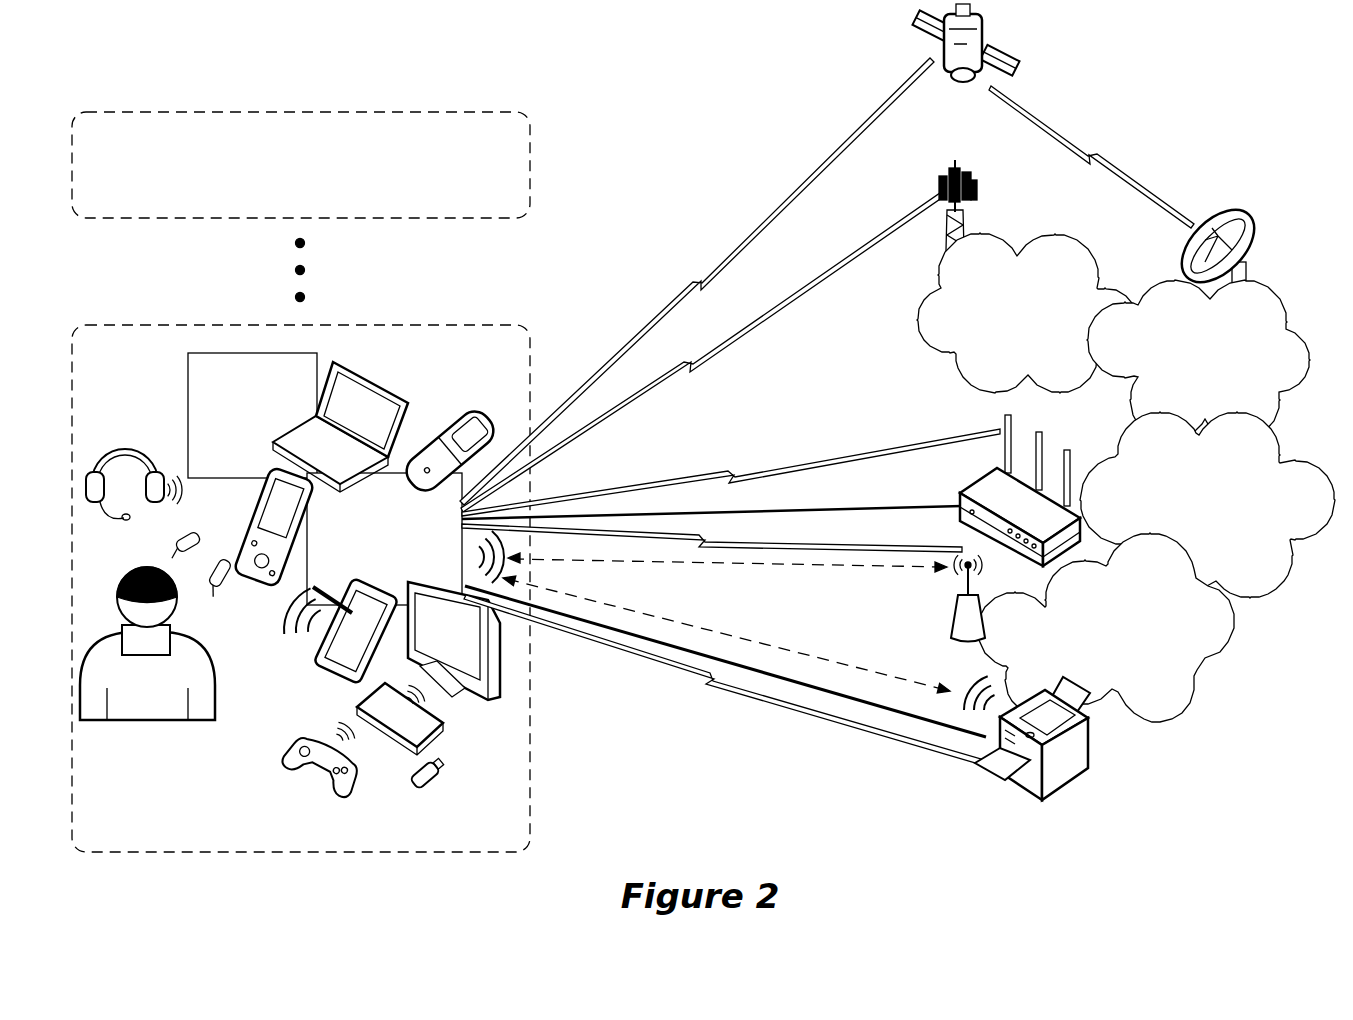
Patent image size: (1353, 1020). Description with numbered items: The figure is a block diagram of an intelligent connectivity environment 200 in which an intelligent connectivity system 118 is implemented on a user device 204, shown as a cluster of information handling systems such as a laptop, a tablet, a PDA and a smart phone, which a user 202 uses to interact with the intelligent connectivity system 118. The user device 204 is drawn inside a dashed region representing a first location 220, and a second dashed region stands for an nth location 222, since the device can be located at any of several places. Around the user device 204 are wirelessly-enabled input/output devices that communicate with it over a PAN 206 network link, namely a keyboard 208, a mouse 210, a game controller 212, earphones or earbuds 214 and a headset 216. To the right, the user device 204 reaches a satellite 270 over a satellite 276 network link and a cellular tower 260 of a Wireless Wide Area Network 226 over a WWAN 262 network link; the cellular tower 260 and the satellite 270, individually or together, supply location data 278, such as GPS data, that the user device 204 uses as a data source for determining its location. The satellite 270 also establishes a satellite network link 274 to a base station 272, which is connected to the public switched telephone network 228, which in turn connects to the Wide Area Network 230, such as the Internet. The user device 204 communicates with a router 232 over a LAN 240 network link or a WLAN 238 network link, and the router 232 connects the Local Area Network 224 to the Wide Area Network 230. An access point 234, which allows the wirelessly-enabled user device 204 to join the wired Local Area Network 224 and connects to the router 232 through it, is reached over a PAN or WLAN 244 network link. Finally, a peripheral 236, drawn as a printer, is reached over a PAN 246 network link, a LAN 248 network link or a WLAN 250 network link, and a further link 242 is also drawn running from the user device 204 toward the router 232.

The intelligent connectivity environment 200 is at (135, 78).
The location 'n' 222 is at (301, 165).
The location '1' 220 is at (301, 588).
The intelligent connectivity system 118 is at (252, 415).
The user device 204 is at (384, 539).
The headset 216 is at (116, 448).
The earphones or earbuds 214 is at (187, 525).
The user 202 is at (122, 720).
The Personal Area Network (PAN) network link 206 is at (275, 612).
The game controller 212 is at (292, 736).
The keyboard 208 is at (447, 726).
The mouse 210 is at (437, 776).
The satellite 270 is at (1005, 40).
The satellite network link 276 is at (620, 347).
The WWAN network link 262 is at (765, 313).
The location data 278 is at (850, 252).
The cellular tower 260 is at (978, 180).
The satellite network link to base station 274 is at (1120, 166).
The base station 272 is at (1253, 228).
The Wireless Wide Area Network (WWAN) 226 is at (1027, 313).
The public switched telephone network (PSTN) 228 is at (1198, 360).
The Wide Area Network (WAN) 230 is at (1207, 505).
The Local Area Network (LAN) 224 is at (1105, 627).
The router 232 is at (980, 473).
The WLAN network link to router 238 is at (720, 463).
The LAN network link to router 240 is at (795, 505).
The wireless link to router 242 is at (757, 543).
The PAN or WLAN network link to access point 244 is at (642, 563).
The PAN network link to peripheral 246 is at (745, 638).
The access point 234 is at (953, 607).
The LAN network link to peripheral 248 is at (828, 683).
The WLAN network link to peripheral 250 is at (785, 700).
The peripheral 236 is at (1090, 748).